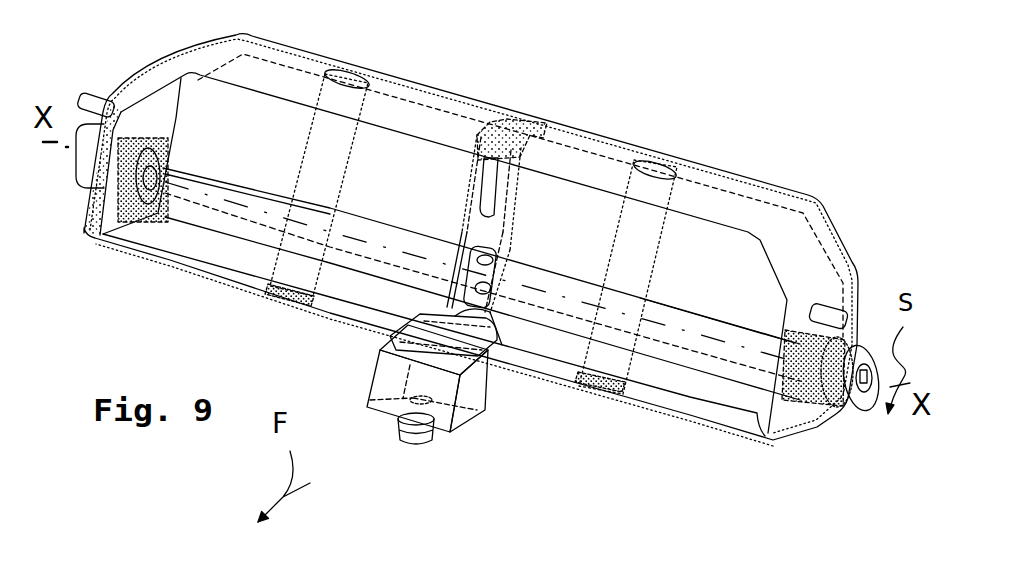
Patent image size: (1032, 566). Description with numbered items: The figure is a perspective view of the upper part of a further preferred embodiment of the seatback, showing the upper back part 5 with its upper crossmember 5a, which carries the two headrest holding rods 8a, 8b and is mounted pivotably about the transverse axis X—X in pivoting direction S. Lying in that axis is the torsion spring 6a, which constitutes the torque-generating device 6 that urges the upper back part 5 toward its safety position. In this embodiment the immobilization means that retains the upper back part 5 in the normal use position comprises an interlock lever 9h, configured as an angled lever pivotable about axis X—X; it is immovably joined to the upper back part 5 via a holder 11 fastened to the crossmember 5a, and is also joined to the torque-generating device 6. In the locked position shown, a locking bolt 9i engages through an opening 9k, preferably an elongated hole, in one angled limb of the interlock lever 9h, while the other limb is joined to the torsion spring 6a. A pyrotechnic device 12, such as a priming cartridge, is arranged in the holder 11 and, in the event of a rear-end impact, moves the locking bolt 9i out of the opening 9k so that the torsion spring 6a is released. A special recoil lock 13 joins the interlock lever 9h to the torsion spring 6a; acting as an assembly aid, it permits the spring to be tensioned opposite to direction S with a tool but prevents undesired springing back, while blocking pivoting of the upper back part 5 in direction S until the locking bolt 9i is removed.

The upper back part 5 is at (197, 301).
The upper crossmember 5a is at (748, 222).
The torque-generating device 6 is at (481, 331).
The torsion spring 6a is at (668, 335).
The holding rod 8a is at (657, 168).
The holding rod 8b is at (345, 75).
The interlock lever 9h is at (518, 157).
The locking bolt 9i is at (398, 340).
The opening 9k is at (477, 332).
The holder 11 is at (472, 405).
The pyrotechnic device 12 is at (421, 445).
The recoil lock 13 is at (467, 248).